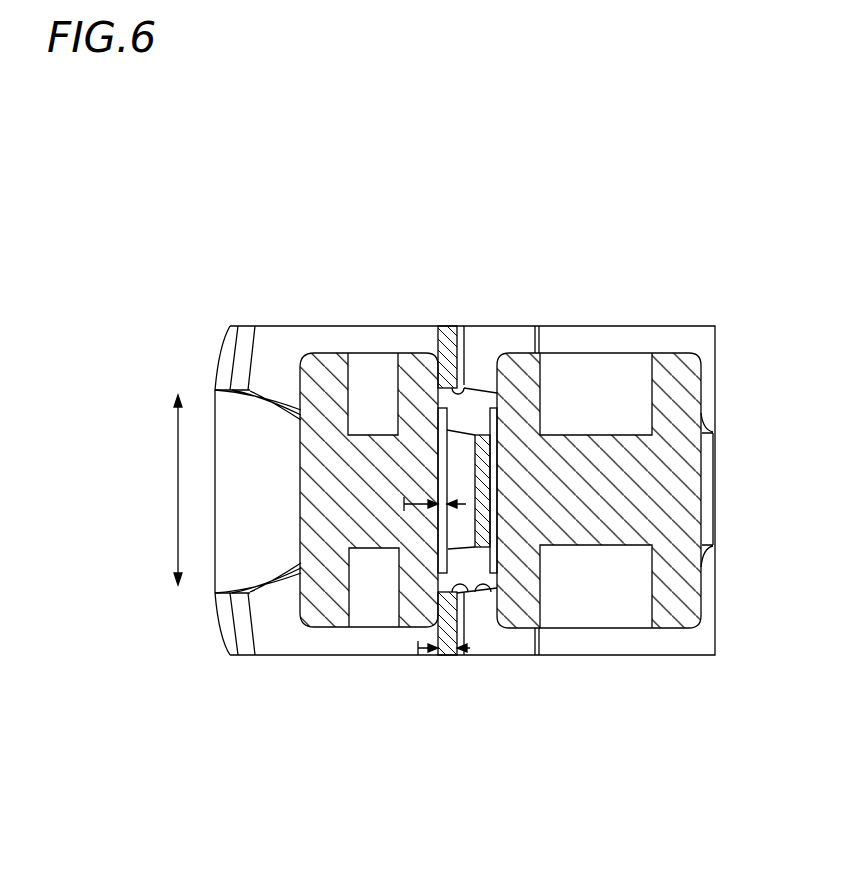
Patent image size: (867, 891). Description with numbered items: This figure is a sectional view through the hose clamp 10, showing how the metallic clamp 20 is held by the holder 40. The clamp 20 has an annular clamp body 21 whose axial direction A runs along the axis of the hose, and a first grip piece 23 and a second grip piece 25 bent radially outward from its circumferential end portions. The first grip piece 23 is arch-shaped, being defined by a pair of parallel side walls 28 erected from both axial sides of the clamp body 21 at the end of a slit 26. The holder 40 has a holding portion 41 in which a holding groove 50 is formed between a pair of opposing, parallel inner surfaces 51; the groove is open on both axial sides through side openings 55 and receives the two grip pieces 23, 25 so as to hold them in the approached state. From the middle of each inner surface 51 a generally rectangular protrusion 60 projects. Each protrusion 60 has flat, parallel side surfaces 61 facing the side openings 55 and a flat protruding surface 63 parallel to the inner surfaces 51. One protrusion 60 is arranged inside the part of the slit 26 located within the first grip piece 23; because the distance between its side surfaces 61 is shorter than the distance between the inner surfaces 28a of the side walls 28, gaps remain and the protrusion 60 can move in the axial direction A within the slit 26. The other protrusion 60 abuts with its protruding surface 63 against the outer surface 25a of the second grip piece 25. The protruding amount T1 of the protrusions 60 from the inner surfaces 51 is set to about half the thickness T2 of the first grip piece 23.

The hose clamp 10 is at (240, 317).
The clamp 20 is at (709, 662).
The clamp body 21 is at (247, 653).
The first grip piece 23 is at (451, 320).
The second grip piece 25 is at (497, 365).
The outer surface 25a is at (500, 392).
The slit 26 is at (482, 596).
The side walls 28 is at (447, 385).
The inner surfaces 28a is at (475, 354).
The holder 40 is at (318, 646).
The holding portion 41 is at (701, 485).
The holding groove 50 is at (486, 388).
The inner surfaces 51 is at (450, 600).
The side openings 55 is at (484, 433).
The protrusions 60 is at (404, 470).
The side surfaces 61 is at (440, 385).
The protruding surface 63 is at (500, 483).
The axial direction A is at (175, 490).
The protruding amount T1 is at (405, 496).
The thickness T2 is at (418, 656).